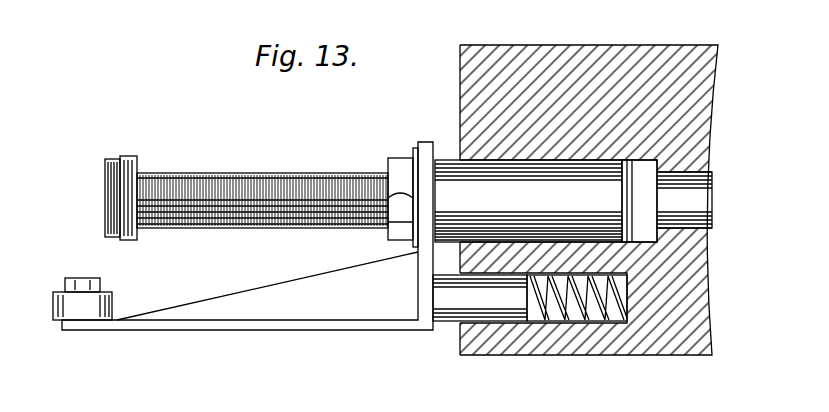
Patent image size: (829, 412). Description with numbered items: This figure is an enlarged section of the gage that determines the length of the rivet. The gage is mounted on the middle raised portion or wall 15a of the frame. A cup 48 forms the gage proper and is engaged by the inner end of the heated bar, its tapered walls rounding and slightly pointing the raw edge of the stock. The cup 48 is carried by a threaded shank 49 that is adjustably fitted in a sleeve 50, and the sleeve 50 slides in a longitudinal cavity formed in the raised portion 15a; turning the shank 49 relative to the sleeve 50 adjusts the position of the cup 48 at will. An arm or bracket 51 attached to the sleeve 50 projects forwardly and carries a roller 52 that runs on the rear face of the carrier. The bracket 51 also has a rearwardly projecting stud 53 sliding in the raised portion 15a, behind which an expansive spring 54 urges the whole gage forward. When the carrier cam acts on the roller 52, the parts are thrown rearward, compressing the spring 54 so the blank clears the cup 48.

The middle raised portion or wall of the frame 15a is at (598, 48).
The cup 48 is at (108, 193).
The threaded shank 49 is at (283, 226).
The sleeve 50 is at (573, 201).
The arm 51 is at (247, 236).
The roller 52 is at (112, 296).
The rearwardly-projecting stud 53 is at (480, 307).
The expansive spring 54 is at (557, 323).